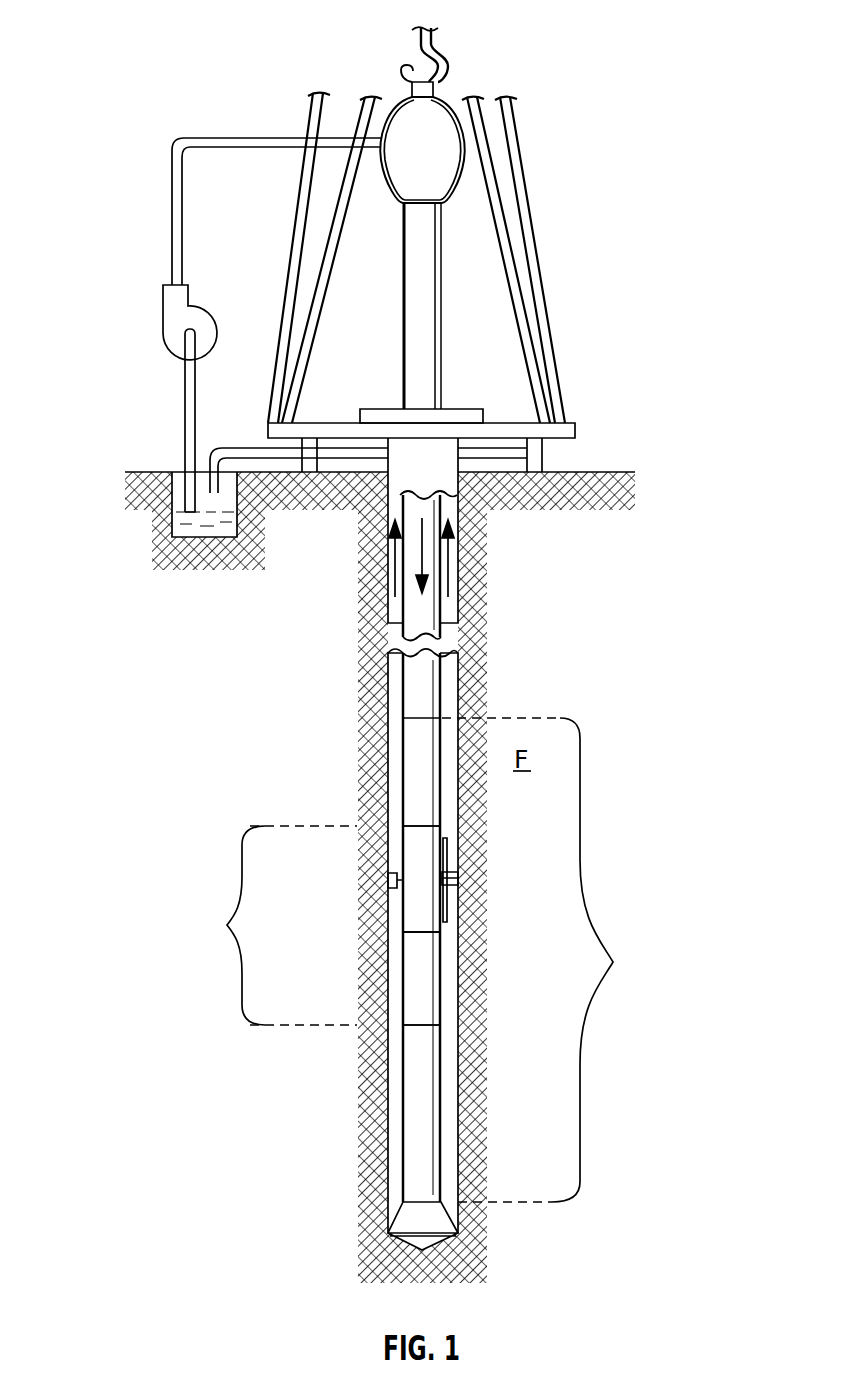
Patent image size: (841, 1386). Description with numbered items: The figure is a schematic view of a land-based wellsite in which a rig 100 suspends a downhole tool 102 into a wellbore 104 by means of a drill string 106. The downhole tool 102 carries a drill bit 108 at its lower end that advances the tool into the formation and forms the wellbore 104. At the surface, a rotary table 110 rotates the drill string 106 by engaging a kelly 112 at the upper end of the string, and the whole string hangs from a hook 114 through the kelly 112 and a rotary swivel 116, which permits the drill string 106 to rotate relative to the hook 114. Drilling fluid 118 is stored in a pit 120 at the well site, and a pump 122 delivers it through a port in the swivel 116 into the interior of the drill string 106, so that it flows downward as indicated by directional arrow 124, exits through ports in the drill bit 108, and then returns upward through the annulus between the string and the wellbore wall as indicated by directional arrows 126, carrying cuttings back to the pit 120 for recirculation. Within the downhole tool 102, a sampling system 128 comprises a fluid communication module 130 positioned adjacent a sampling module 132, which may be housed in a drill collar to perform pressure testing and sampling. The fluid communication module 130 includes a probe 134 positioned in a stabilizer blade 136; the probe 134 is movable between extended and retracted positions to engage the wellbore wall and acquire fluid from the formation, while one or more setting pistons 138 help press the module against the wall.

The rig 100 is at (172, 58).
The downhole tool 102 is at (394, 877).
The wellbore 104 is at (457, 603).
The drill string 106 is at (425, 682).
The drill bit 108 is at (413, 1220).
The rotary table 110 is at (460, 407).
The kelly 112 is at (428, 314).
The hook 114 is at (436, 40).
The rotary swivel 116 is at (397, 178).
The drilling fluid 118 is at (212, 524).
The pit 120 is at (166, 521).
The pump 122 is at (170, 350).
The directional arrow 124 is at (422, 543).
The directional arrows 126 is at (448, 557).
The sampling system 128 is at (270, 925).
The fluid communication module 130 is at (415, 922).
The sampling module 132 is at (415, 982).
The probe 134 is at (455, 882).
The stabilizer blade 136 is at (445, 850).
The setting piston 138 is at (385, 878).